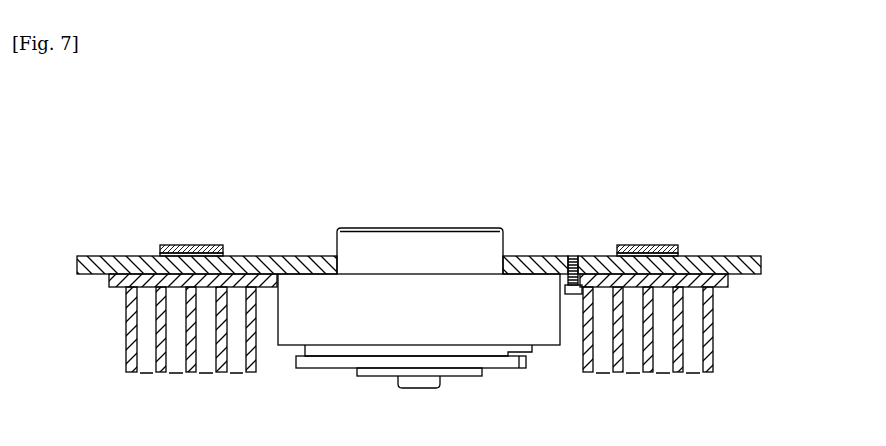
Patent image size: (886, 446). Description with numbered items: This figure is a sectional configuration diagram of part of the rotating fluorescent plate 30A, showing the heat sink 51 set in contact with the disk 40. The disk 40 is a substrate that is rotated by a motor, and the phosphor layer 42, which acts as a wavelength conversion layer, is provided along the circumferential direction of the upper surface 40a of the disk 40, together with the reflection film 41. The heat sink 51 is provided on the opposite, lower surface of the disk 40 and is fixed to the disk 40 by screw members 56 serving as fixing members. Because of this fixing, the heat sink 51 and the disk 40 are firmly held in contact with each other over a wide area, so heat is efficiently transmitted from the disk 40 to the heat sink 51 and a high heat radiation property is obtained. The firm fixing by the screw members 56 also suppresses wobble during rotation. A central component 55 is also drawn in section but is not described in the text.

The rotating fluorescent plate 30A is at (137, 162).
The disk 40 is at (747, 266).
The upper surface 40a is at (721, 289).
The reflection film 41 is at (685, 255).
The phosphor layer 42 is at (683, 249).
The heat sink 51 is at (100, 322).
The light emitting element package 55 is at (400, 252).
The screw members 56 is at (573, 294).